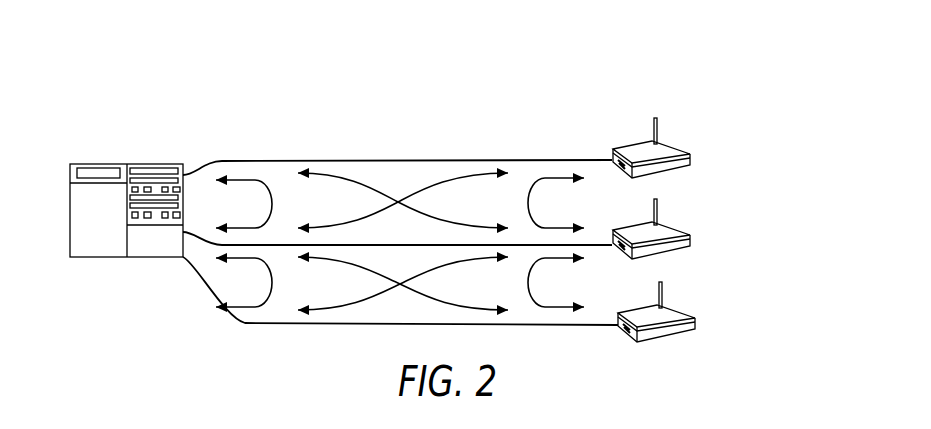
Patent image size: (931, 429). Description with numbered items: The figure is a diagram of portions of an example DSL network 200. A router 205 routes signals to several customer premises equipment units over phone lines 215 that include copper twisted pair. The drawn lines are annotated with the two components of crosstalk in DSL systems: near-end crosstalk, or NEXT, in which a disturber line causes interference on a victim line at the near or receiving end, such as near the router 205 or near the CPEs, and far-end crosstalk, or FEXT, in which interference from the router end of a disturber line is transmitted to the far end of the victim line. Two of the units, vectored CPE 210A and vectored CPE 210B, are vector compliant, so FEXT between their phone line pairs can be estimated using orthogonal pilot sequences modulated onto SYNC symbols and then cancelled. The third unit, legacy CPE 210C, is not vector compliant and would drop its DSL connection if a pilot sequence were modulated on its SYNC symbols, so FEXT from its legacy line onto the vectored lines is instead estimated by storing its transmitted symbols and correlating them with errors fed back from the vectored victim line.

The DSL network 200 is at (766, 91).
The router 205 is at (136, 163).
The phone lines 215 is at (407, 160).
The vectored CPE 210A is at (621, 144).
The vectored CPE 210B is at (624, 226).
The legacy CPE 210C is at (633, 308).